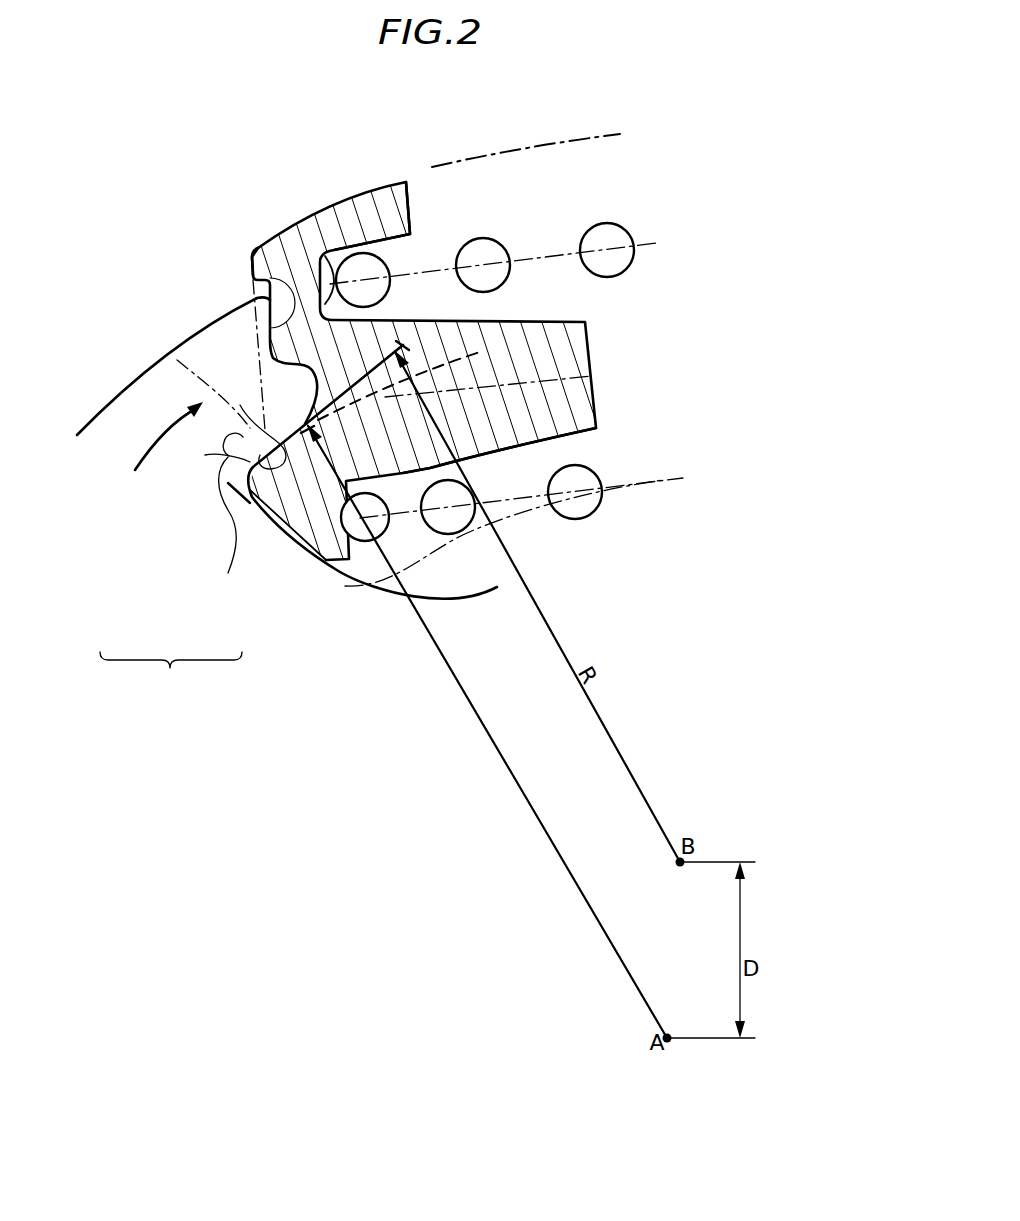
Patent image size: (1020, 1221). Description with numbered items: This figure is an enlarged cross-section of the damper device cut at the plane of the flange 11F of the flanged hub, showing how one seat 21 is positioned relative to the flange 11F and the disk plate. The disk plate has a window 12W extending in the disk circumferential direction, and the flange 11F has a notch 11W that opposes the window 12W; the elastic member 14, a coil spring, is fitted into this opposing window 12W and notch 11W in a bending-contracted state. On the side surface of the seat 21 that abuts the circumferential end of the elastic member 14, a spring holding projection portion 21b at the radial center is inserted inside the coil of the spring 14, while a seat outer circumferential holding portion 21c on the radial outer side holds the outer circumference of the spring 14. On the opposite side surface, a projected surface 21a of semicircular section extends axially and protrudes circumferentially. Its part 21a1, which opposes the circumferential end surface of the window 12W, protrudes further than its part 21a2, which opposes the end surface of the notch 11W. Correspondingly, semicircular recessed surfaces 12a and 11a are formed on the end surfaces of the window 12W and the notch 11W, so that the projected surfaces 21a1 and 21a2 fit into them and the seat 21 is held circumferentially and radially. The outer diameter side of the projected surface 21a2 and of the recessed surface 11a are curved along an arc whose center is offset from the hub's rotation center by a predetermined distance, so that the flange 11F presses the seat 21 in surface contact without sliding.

The notch 11W is at (262, 252).
The flange 11F is at (133, 398).
The recessed surface 11a is at (240, 405).
The window 12W is at (507, 152).
The recessed surface 12a is at (177, 357).
The elastic member 14 is at (613, 234).
The seat 21 is at (626, 358).
The projected surface 21a is at (171, 679).
The part of projected surface opposing window 21a1 is at (205, 455).
The part of projected surface opposing notch 21a2 is at (228, 573).
The spring holding projection portion 21b is at (577, 418).
The seat outer circumferential holding portion 21c is at (386, 208).